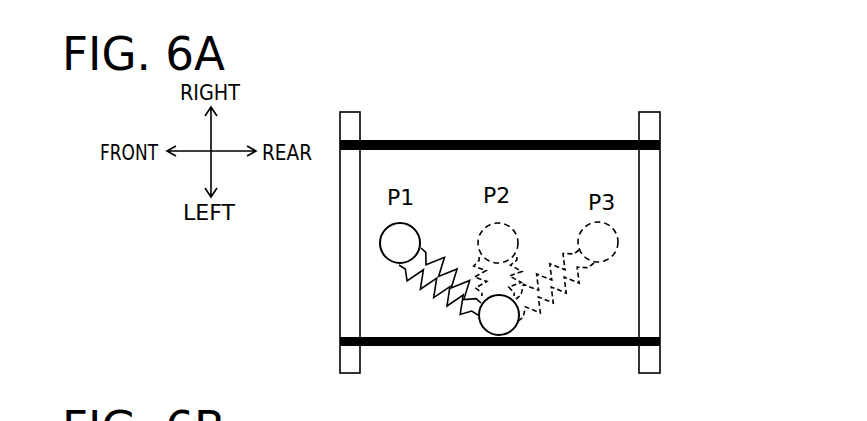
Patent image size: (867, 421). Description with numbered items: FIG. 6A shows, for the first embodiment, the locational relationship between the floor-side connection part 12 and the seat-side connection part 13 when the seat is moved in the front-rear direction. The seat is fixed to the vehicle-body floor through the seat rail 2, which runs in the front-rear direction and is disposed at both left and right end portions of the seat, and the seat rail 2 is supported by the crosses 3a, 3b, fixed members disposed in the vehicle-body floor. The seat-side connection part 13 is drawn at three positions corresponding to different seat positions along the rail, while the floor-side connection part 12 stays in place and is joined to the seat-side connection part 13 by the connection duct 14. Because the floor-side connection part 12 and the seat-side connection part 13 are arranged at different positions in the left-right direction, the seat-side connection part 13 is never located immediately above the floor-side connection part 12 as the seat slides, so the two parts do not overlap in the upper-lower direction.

The seat rail 2 is at (405, 140).
The cross 3a is at (340, 312).
The cross 3b is at (660, 309).
The floor-side connection part 12 is at (515, 330).
The seat-side connection part 13 is at (385, 230).
The connection duct 14 is at (433, 293).